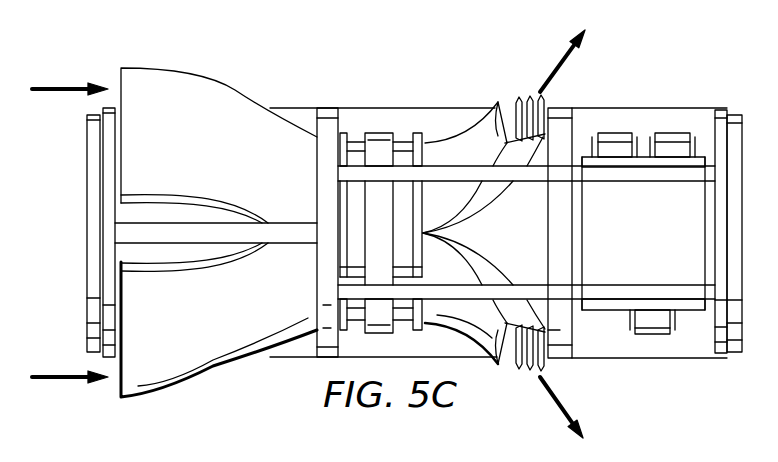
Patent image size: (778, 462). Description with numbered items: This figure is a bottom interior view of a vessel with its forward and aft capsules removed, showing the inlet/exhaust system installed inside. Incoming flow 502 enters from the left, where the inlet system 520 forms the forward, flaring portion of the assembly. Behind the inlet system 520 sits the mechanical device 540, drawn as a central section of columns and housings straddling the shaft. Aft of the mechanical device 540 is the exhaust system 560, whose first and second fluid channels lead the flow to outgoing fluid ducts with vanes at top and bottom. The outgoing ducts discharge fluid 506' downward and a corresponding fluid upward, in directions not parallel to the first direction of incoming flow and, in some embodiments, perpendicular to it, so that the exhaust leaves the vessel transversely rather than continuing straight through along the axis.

The inlet airflow 502 is at (70, 87).
The inlet system 520 is at (121, 55).
The mechanical device 540 is at (343, 55).
The exhaust system 560 is at (427, 55).
The fluid 506' is at (593, 407).